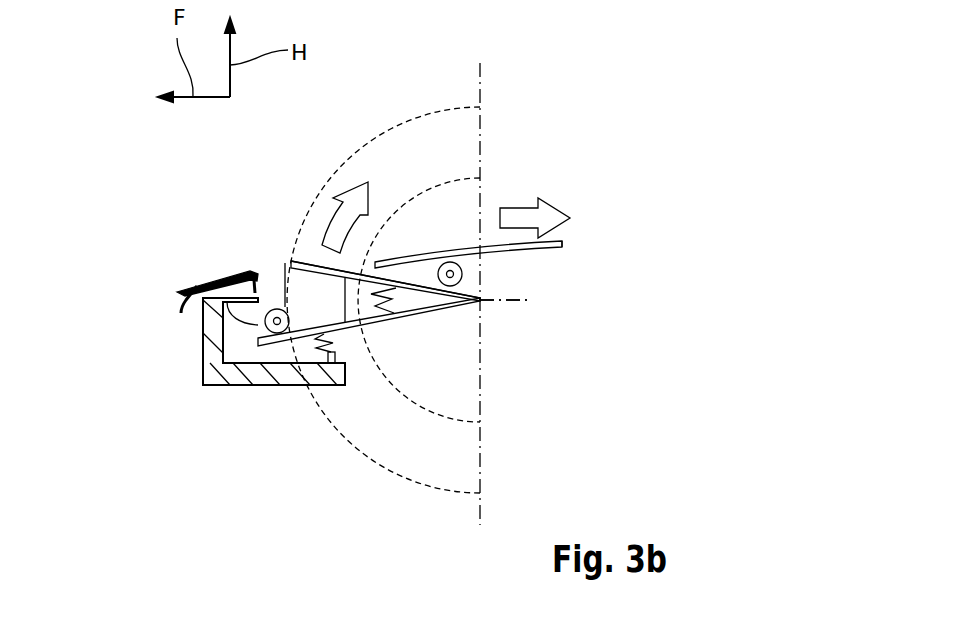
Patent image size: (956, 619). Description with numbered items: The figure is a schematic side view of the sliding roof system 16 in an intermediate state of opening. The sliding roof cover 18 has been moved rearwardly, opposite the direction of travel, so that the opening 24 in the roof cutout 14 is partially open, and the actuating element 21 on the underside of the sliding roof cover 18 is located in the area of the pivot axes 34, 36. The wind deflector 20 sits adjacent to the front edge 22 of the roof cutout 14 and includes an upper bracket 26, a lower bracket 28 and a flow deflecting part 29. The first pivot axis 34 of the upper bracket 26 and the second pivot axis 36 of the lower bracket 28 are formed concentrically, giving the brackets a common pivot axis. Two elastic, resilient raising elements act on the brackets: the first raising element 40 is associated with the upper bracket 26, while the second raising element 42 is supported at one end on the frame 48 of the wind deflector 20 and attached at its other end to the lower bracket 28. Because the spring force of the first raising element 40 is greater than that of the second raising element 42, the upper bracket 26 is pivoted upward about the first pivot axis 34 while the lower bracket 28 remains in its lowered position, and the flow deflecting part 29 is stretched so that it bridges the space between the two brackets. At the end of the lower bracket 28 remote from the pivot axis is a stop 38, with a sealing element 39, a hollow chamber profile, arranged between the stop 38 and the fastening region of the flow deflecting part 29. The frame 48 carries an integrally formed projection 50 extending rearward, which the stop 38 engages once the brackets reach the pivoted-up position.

The roof cutout 14 is at (157, 238).
The sliding roof system 16 is at (542, 100).
The sliding roof cover 18 is at (562, 243).
The wind deflector 20 is at (128, 427).
The actuating element 21 is at (455, 254).
The front edge 22 is at (235, 272).
The opening 24 is at (262, 243).
The upper bracket 26 is at (458, 287).
The lower bracket 28 is at (432, 305).
The flow deflecting part 29 is at (300, 280).
The first pivot axis 34 is at (482, 302).
The second pivot axis 36 is at (482, 302).
The stop 38 is at (265, 331).
The sealing element 39 is at (252, 325).
The first raising element 40 is at (408, 310).
The second raising element 42 is at (336, 354).
The frame 48 is at (217, 377).
The projection 50 is at (222, 320).